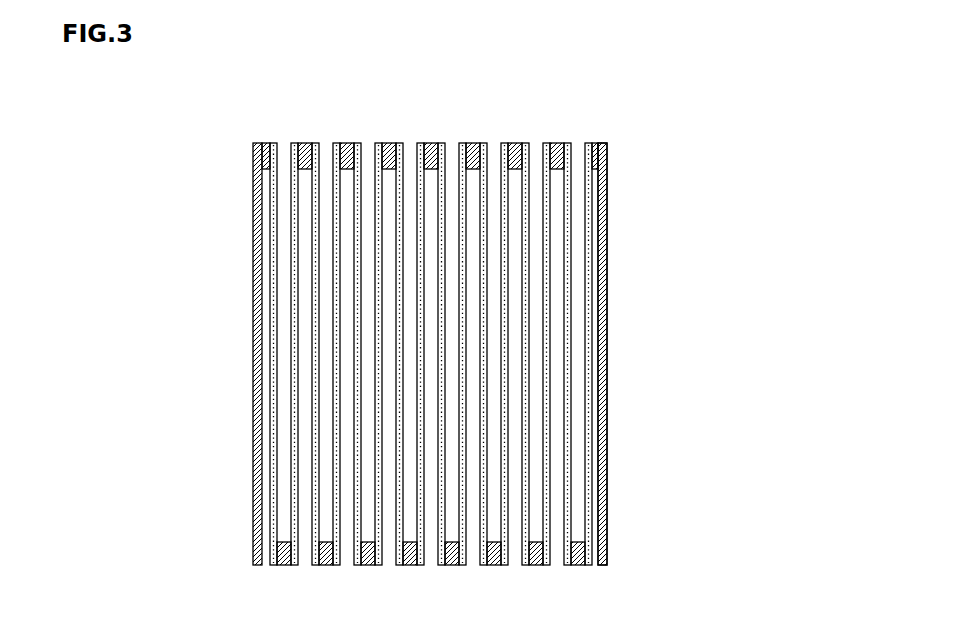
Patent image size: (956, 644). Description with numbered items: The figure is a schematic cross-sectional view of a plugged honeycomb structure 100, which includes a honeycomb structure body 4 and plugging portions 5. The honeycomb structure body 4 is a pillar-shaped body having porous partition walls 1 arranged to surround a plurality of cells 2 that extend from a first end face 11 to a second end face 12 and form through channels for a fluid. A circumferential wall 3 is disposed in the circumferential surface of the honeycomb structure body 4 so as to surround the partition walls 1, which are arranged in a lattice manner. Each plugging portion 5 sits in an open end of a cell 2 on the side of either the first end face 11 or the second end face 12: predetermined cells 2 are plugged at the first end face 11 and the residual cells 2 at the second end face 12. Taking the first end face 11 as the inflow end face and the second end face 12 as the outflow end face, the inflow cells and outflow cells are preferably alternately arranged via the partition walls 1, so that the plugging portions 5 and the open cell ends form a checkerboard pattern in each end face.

The plugged honeycomb structure 100 is at (661, 53).
The partition walls 1 is at (482, 150).
The cells 2 is at (410, 160).
The circumferential wall 3 is at (607, 216).
The honeycomb structure body 4 is at (612, 303).
The plugging portions 5 is at (557, 150).
The first end face 11 is at (275, 132).
The second end face 12 is at (268, 573).